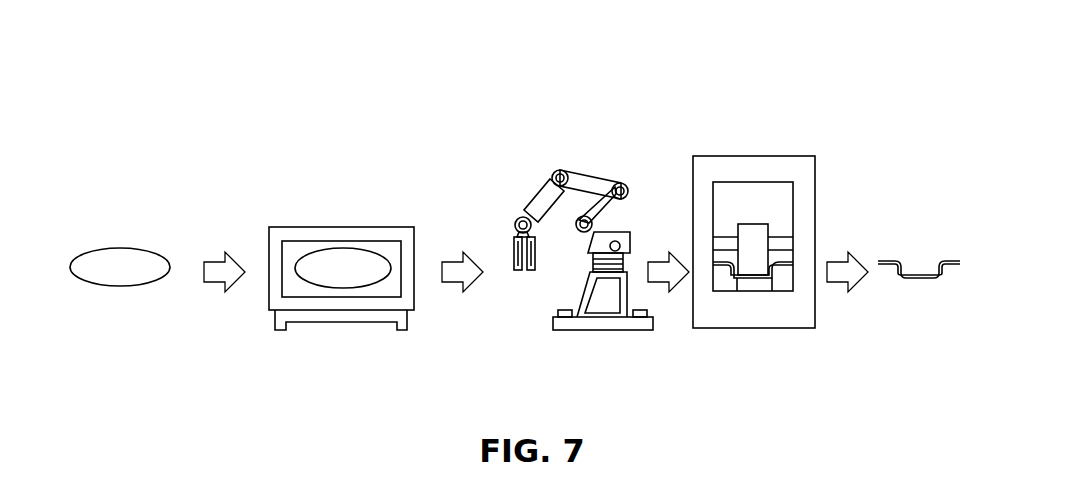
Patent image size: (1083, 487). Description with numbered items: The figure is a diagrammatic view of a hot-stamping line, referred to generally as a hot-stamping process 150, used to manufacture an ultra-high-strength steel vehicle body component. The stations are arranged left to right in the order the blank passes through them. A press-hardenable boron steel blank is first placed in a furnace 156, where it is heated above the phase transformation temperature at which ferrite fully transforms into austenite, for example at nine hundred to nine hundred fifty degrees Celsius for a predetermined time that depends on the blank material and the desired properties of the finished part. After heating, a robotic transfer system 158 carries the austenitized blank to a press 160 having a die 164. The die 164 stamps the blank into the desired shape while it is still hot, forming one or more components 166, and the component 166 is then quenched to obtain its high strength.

The hot-stamping process 150 is at (833, 47).
The furnace 156 is at (342, 310).
The robotic transfer system 158 is at (589, 180).
The press 160 is at (753, 156).
The die 164 is at (783, 261).
The component 166 is at (915, 268).